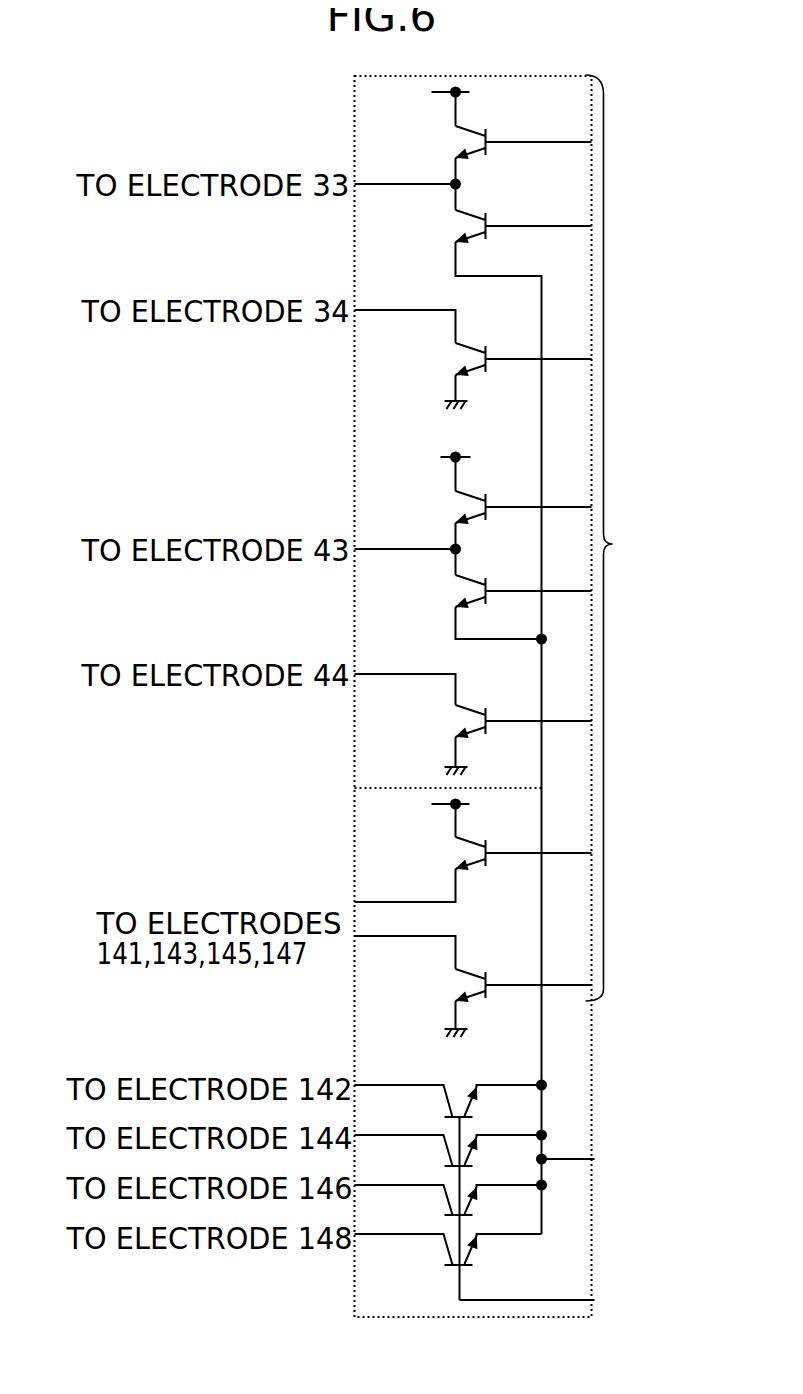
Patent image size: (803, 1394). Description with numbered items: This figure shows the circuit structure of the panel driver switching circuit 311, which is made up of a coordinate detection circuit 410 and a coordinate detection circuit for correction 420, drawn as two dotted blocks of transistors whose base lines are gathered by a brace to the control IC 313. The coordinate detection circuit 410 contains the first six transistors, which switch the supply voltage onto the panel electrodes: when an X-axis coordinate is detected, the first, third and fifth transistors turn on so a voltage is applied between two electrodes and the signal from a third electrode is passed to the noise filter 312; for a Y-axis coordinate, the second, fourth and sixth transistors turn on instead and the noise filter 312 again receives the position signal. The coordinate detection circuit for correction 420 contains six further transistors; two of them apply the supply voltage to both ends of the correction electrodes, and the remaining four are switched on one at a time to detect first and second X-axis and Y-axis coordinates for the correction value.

The panel driver switching circuit 311 is at (187, 91).
The coordinate detection circuit 410 is at (356, 110).
The coordinate detection circuit for correction 420 is at (357, 840).
The control IC 313 is at (567, 696).
The noise filter 312 is at (593, 1161).